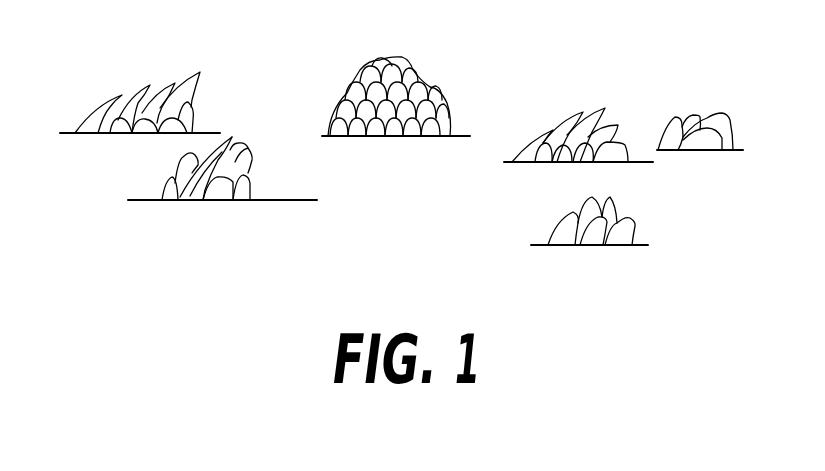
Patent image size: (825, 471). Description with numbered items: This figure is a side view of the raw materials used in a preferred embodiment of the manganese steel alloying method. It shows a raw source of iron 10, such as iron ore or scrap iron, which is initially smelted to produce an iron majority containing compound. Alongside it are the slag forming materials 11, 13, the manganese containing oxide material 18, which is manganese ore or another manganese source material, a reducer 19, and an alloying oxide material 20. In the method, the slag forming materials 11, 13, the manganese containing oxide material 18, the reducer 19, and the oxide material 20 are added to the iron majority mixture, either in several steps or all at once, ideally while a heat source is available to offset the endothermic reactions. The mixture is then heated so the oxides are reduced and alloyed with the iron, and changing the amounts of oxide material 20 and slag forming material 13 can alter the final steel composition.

The raw source of iron 10 is at (443, 90).
The slag forming material 11 is at (200, 72).
The slag forming material 13 is at (232, 137).
The manganese containing oxide material 18 is at (583, 112).
The reducer 19 is at (633, 235).
The oxide material 20 is at (722, 113).